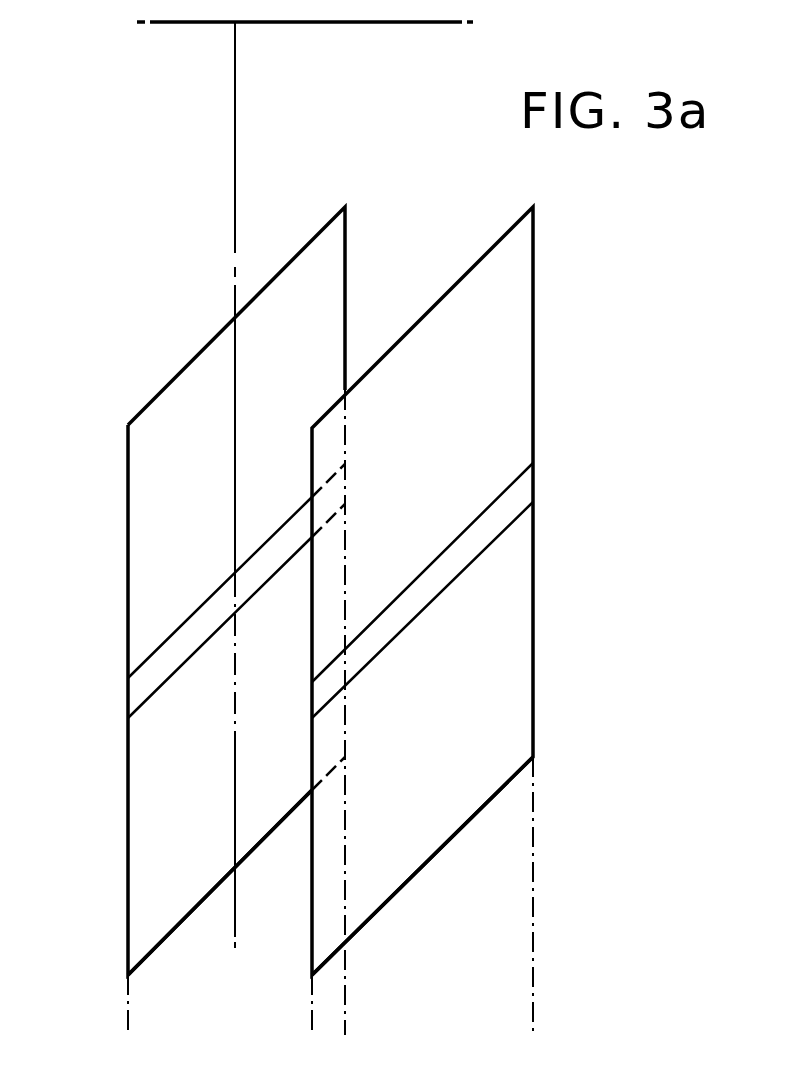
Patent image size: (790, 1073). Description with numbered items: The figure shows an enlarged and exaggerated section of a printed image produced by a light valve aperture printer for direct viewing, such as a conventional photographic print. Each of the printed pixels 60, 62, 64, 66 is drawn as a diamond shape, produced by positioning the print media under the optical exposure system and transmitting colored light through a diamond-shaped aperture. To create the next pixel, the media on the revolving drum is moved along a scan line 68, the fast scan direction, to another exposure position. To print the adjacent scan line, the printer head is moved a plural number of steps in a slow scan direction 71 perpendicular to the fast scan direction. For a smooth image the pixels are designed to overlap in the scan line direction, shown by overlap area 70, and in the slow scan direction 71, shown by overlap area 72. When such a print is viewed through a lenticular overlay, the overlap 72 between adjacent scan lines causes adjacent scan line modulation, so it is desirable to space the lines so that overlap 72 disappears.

The printed pixel 60 is at (166, 387).
The printed pixel 62 is at (450, 290).
The printed pixel 64 is at (173, 932).
The printed pixel 66 is at (415, 875).
The scan line 68 is at (235, 202).
The overlap area 70 is at (130, 689).
The slow scan direction 71 is at (383, 24).
The overlap area 72 is at (338, 573).